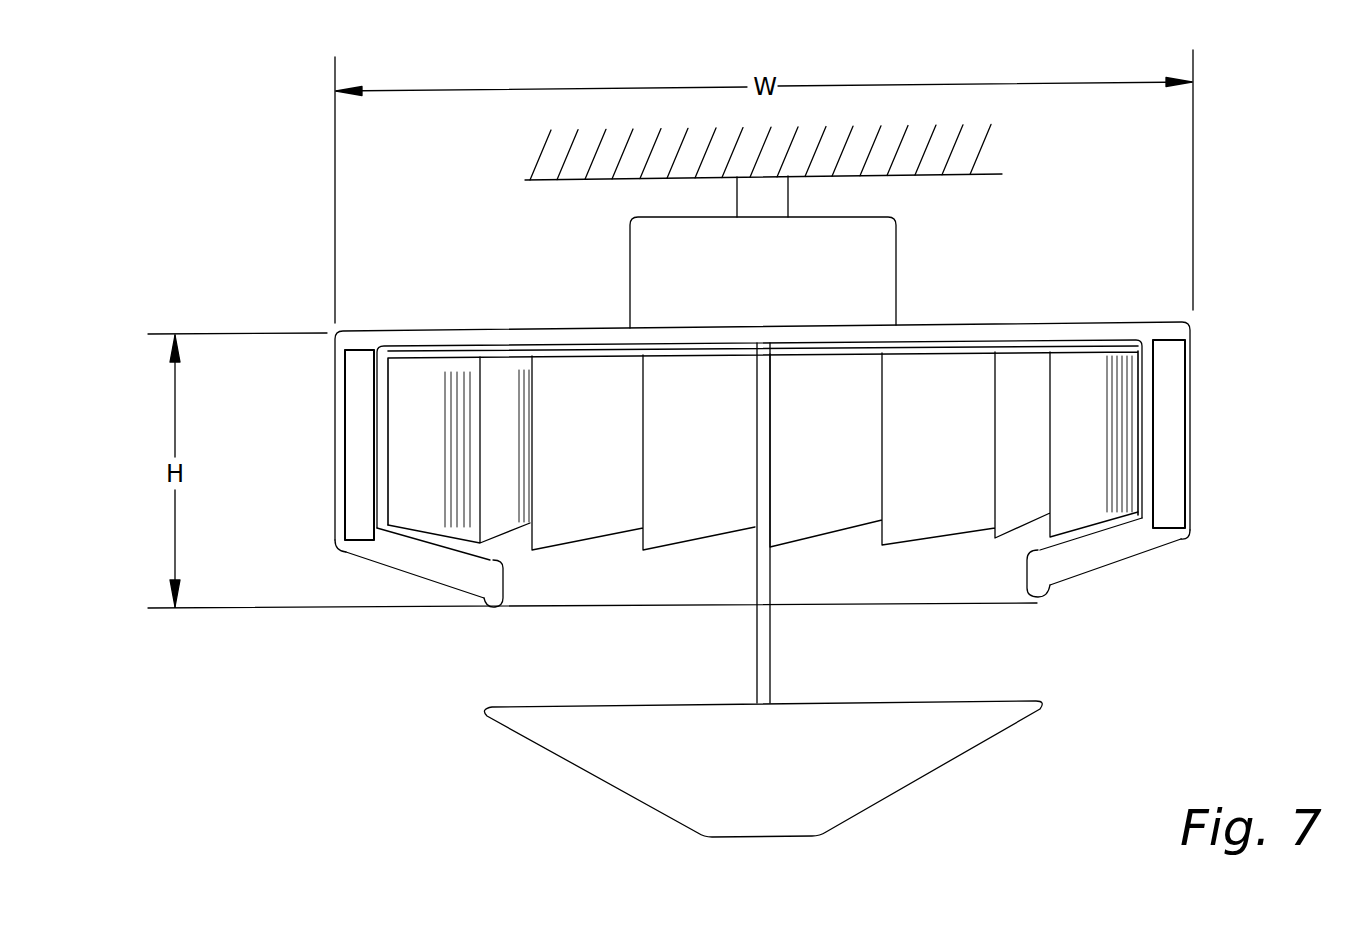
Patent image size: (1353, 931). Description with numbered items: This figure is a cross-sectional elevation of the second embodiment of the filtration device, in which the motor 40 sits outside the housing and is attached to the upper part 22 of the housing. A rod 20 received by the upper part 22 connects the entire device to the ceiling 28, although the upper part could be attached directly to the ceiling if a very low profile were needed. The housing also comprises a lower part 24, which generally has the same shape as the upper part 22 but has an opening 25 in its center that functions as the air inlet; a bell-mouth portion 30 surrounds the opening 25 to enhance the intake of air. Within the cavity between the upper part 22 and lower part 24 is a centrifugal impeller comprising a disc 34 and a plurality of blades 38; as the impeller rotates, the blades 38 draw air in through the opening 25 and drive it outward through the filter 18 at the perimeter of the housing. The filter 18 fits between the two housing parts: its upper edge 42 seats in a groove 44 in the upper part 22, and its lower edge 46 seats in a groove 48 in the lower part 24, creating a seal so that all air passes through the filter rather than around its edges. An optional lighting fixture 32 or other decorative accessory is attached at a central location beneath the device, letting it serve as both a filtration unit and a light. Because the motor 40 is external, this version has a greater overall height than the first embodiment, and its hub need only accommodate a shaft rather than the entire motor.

The filter 18 is at (353, 428).
The rod 20 is at (753, 209).
The upper part 22 is at (452, 350).
The lower part 24 is at (437, 570).
The opening 25 is at (538, 590).
The ceiling 28 is at (558, 165).
The bell-mouth portion 30 is at (493, 607).
The lighting fixture 32 is at (902, 778).
The disc 34 is at (423, 358).
The blades 38 is at (498, 378).
The motor 40 is at (885, 237).
The upper edge 42 is at (348, 357).
The groove 44 is at (366, 345).
The lower edge 46 is at (350, 532).
The groove 48 is at (348, 545).